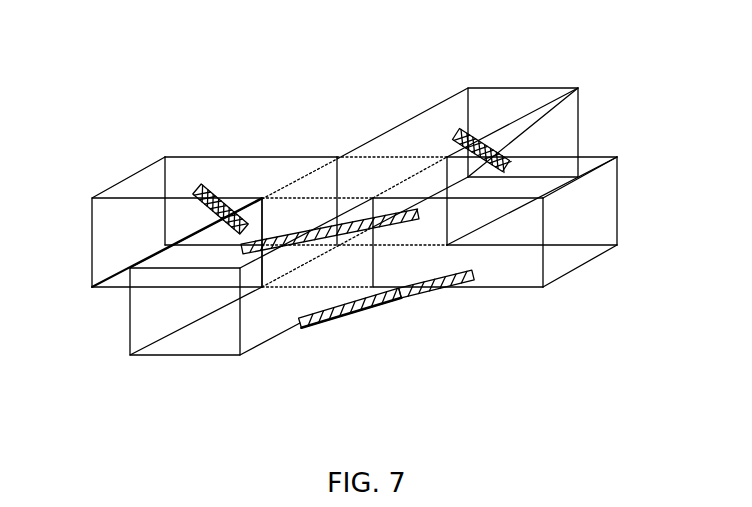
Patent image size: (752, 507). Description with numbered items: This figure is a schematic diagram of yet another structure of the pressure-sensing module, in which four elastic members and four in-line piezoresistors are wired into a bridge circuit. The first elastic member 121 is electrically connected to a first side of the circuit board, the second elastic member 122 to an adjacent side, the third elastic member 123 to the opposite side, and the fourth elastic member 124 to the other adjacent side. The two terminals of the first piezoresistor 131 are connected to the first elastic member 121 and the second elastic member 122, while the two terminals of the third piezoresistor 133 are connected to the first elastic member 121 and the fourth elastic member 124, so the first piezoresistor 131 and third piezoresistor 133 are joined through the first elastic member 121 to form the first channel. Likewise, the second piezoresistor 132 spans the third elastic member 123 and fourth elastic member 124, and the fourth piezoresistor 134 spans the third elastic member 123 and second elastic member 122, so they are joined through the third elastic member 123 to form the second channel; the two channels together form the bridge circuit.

The first elastic member 121 is at (511, 98).
The second elastic member 122 is at (607, 222).
The third elastic member 123 is at (188, 342).
The fourth elastic member 124 is at (120, 243).
The first piezoresistor 131 is at (473, 133).
The second piezoresistor 132 is at (215, 193).
The third piezoresistor 133 is at (300, 238).
The fourth piezoresistor 134 is at (397, 296).